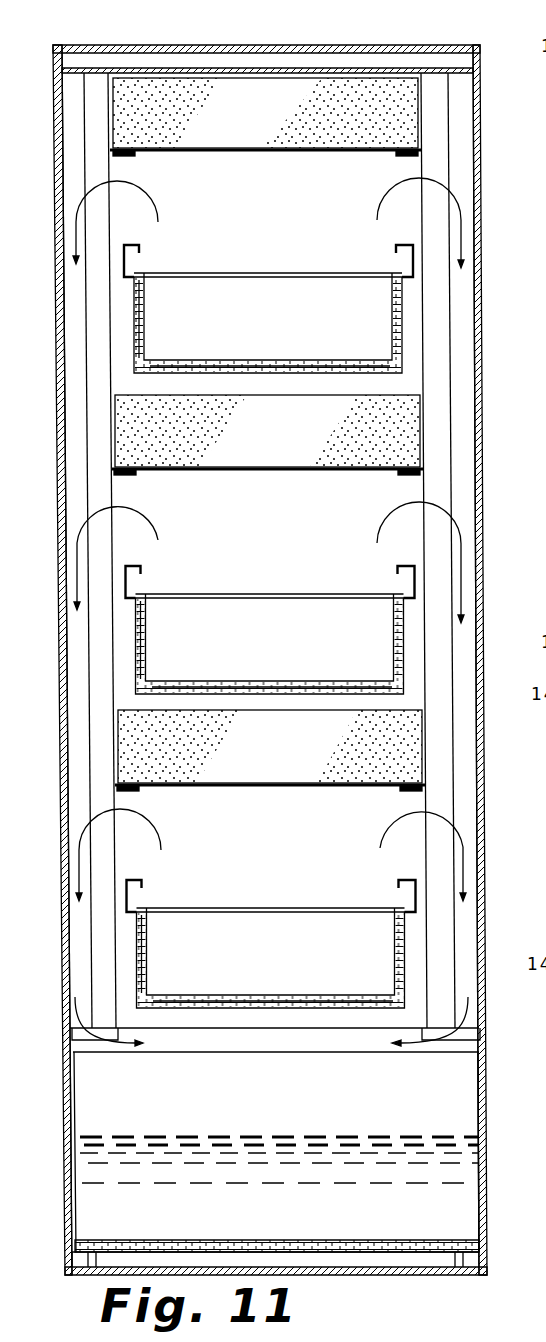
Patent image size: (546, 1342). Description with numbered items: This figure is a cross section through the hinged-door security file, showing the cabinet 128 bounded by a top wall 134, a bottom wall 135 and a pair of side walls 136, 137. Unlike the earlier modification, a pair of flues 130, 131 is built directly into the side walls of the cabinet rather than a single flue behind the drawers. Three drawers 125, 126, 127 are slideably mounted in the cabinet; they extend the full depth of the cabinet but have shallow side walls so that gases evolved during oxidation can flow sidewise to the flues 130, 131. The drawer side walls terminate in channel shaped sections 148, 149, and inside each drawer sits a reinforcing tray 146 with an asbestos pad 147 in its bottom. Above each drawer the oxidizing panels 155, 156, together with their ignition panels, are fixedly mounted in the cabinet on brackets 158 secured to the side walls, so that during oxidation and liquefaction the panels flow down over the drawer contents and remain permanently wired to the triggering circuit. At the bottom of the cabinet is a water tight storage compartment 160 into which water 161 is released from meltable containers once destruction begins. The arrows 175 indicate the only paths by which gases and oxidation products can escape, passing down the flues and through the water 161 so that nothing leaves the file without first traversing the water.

The drawer 125 is at (400, 321).
The drawer 126 is at (403, 657).
The drawer 127 is at (403, 941).
The cabinet 128 is at (484, 89).
The flue 130 is at (463, 384).
The flue 131 is at (72, 413).
The top wall 134 is at (313, 47).
The bottom wall 135 is at (100, 1279).
The side wall 136 is at (55, 161).
The side wall 137 is at (481, 172).
The reinforcing tray 146 is at (145, 305).
The asbestos pad 147 is at (305, 360).
The channel shaped section 148 is at (395, 249).
The channel shaped section 149 is at (139, 248).
The oxidizing panel 155 is at (405, 126).
The oxidizing panel 156 is at (405, 426).
The bracket 158 is at (136, 155).
The storage compartment 160 is at (68, 1071).
The water 161 is at (279, 1182).
The arrows 175 is at (160, 210).